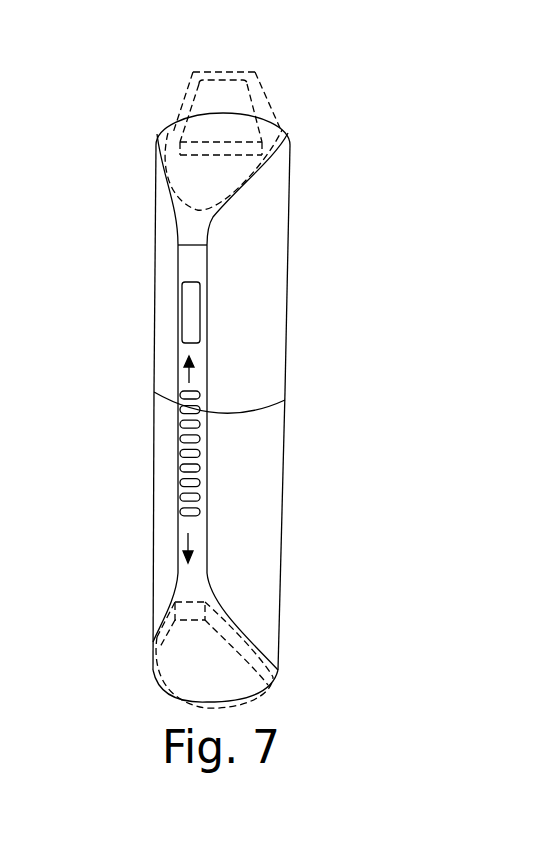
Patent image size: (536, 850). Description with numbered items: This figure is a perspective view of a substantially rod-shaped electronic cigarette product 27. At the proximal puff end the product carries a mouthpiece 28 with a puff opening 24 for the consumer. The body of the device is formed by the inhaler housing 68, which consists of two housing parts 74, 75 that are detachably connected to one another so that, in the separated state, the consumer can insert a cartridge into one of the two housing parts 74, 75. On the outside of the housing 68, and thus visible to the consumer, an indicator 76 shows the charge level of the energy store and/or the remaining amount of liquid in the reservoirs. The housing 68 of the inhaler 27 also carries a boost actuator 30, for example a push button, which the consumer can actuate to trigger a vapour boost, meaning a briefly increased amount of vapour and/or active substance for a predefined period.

The puff opening 24 is at (222, 72).
The mouthpiece 28 is at (262, 97).
The housing part 74 is at (287, 232).
The electronic cigarette product 27 is at (222, 293).
The boost actuator 30 is at (190, 312).
The indicator 76 is at (182, 460).
The inhaler housing 68 is at (285, 452).
The housing part 75 is at (280, 585).